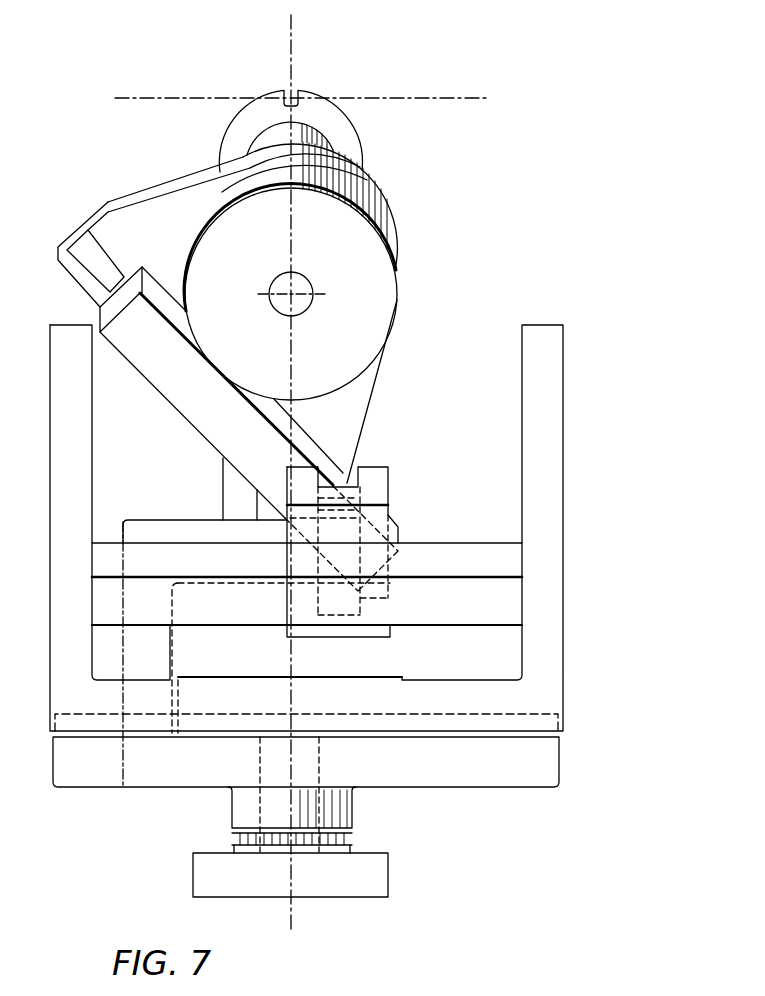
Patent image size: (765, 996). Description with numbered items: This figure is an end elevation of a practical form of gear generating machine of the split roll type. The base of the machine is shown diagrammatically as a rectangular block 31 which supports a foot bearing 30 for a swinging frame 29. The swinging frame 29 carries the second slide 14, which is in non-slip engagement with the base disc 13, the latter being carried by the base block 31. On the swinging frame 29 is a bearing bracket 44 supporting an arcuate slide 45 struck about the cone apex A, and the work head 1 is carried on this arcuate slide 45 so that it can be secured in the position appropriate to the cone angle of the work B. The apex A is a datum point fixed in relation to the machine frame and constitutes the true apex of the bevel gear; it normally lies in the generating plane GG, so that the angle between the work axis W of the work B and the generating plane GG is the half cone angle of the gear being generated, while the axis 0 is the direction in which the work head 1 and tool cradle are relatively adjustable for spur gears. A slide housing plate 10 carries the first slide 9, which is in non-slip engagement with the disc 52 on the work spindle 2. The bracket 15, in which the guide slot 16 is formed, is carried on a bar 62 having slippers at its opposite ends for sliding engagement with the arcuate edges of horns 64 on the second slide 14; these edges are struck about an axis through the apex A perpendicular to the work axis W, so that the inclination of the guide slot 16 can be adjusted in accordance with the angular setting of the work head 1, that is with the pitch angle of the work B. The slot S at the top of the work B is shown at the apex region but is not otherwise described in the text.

The axis OV 0 is at (300, 472).
The generating plane GG G is at (299, 85).
The apex A is at (284, 92).
The slot S is at (296, 92).
The work B is at (226, 131).
The work-head 1 is at (330, 143).
The work spindle 2 is at (304, 280).
The work axis AW W is at (289, 292).
The first slide 9 is at (100, 311).
The slide housing plate 10 is at (374, 378).
The base disc 13 is at (220, 677).
The second slide 14 is at (447, 688).
The bracket 15 is at (383, 512).
The guide slot 16 is at (347, 483).
The swinging frame 29 is at (463, 780).
The foot bearing 30 is at (348, 841).
The rectangular block 31 is at (388, 870).
The bearing bracket 44 is at (140, 525).
The arcuate slide 45 is at (223, 495).
The disc 52 is at (199, 221).
The bar 62 is at (478, 550).
The horns 64 is at (50, 420).